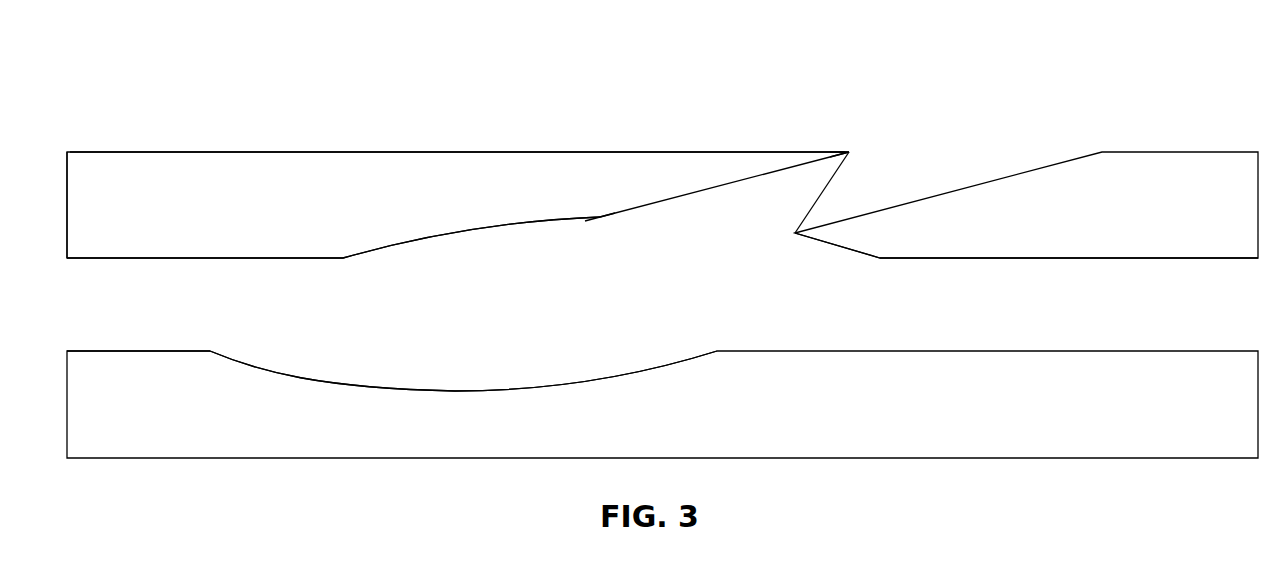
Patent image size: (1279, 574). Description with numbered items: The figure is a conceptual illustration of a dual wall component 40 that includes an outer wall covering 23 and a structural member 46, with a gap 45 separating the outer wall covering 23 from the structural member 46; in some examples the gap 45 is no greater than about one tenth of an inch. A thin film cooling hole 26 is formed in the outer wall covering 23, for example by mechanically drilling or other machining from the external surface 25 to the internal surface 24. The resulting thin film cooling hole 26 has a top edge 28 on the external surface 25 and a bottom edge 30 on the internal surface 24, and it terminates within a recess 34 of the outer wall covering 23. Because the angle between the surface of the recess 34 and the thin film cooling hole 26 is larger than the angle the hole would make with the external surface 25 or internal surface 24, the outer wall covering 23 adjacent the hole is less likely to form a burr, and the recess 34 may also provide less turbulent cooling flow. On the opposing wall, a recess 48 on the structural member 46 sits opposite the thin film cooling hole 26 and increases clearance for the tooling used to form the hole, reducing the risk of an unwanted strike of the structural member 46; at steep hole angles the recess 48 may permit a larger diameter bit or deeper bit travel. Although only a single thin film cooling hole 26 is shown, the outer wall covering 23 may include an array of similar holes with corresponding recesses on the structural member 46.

The dual wall component 40 is at (140, 108).
The outer wall covering 23 is at (215, 209).
The internal surface 24 is at (968, 266).
The external surface 25 is at (466, 145).
The thin film cooling hole 26 is at (826, 211).
The top edge 28 is at (849, 148).
The bottom edge 30 is at (600, 217).
The recess 34 is at (505, 225).
The gap 45 is at (176, 311).
The structural member 46 is at (198, 418).
The recess 48 is at (375, 388).